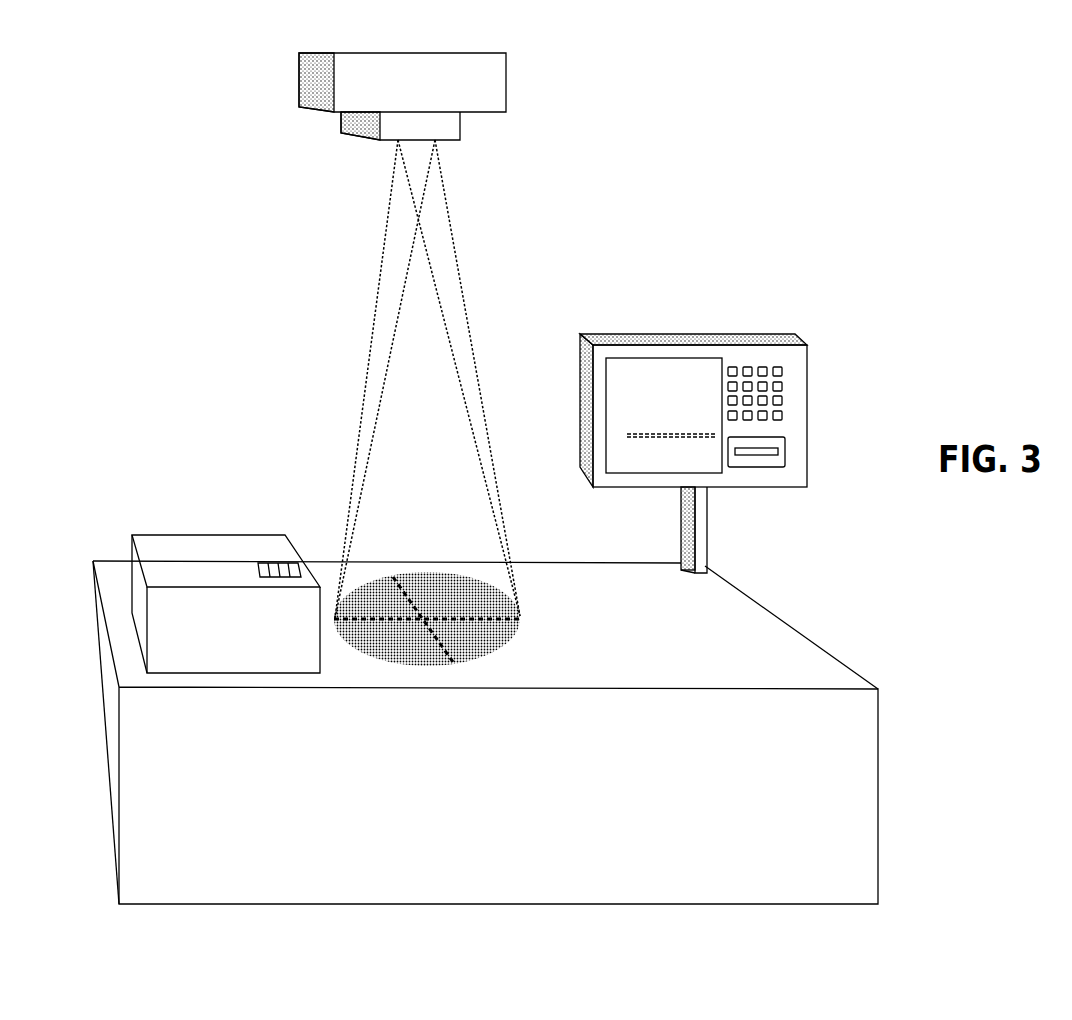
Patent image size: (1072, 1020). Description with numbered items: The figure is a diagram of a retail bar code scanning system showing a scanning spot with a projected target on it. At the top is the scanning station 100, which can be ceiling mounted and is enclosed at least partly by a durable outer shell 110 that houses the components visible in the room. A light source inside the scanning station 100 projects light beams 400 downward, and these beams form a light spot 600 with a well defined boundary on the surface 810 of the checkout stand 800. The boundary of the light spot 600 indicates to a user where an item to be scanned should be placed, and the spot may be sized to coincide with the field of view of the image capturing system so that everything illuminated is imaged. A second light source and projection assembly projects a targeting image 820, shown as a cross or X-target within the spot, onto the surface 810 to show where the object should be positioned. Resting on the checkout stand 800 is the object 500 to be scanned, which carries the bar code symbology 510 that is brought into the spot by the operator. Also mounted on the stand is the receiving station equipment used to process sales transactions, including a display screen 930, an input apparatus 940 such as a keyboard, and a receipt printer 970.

The scanning station 100 is at (477, 83).
The outer shell 110 is at (333, 128).
The light beams 400 is at (437, 213).
The object 500 is at (168, 558).
The bar code symbology 510 is at (270, 553).
The light spot 600 is at (482, 638).
The checkout stand 800 is at (822, 768).
The surface 810 is at (738, 650).
The targeting image 820 is at (388, 630).
The display screen 930 is at (615, 407).
The input apparatus 940 is at (752, 350).
The receipt printer 970 is at (775, 462).